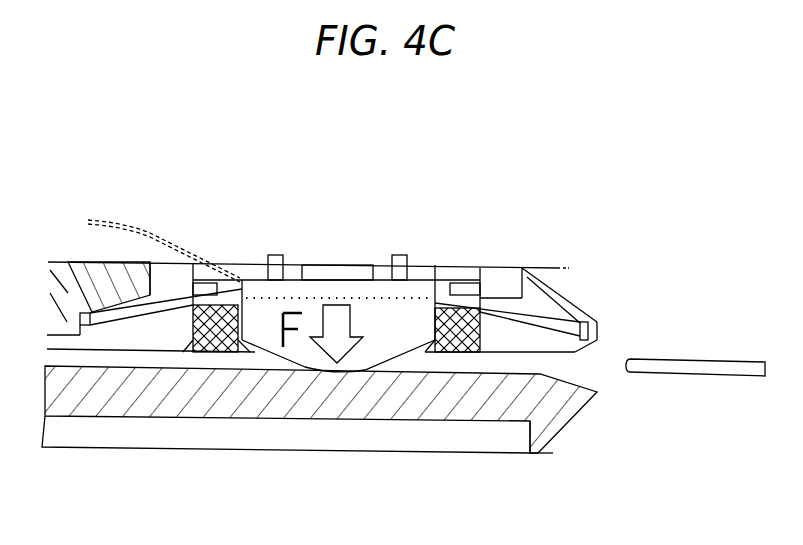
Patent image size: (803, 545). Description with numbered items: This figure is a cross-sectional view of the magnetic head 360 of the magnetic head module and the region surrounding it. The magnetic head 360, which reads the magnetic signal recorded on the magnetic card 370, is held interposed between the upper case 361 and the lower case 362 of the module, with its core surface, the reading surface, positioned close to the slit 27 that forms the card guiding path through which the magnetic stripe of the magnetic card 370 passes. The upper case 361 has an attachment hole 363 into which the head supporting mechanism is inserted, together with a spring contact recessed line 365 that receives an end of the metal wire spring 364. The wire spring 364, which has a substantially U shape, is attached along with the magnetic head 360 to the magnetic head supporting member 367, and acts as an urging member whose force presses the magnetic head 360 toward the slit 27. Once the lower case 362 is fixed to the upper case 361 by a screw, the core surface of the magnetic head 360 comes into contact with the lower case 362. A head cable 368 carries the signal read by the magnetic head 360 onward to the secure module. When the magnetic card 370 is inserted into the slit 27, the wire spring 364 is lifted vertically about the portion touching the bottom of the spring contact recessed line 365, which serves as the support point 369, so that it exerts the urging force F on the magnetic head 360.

The slit 27 is at (148, 362).
The magnetic head 360 is at (385, 322).
The upper case 361 is at (557, 290).
The lower case 362 is at (350, 405).
The attachment hole 363 is at (463, 273).
The wire spring 364 is at (150, 310).
The spring contact recessed line 365 is at (175, 327).
The magnetic head supporting member 367 is at (453, 305).
The head cable 368 is at (177, 235).
The support point 369 is at (68, 276).
The magnetic card 370 is at (737, 358).